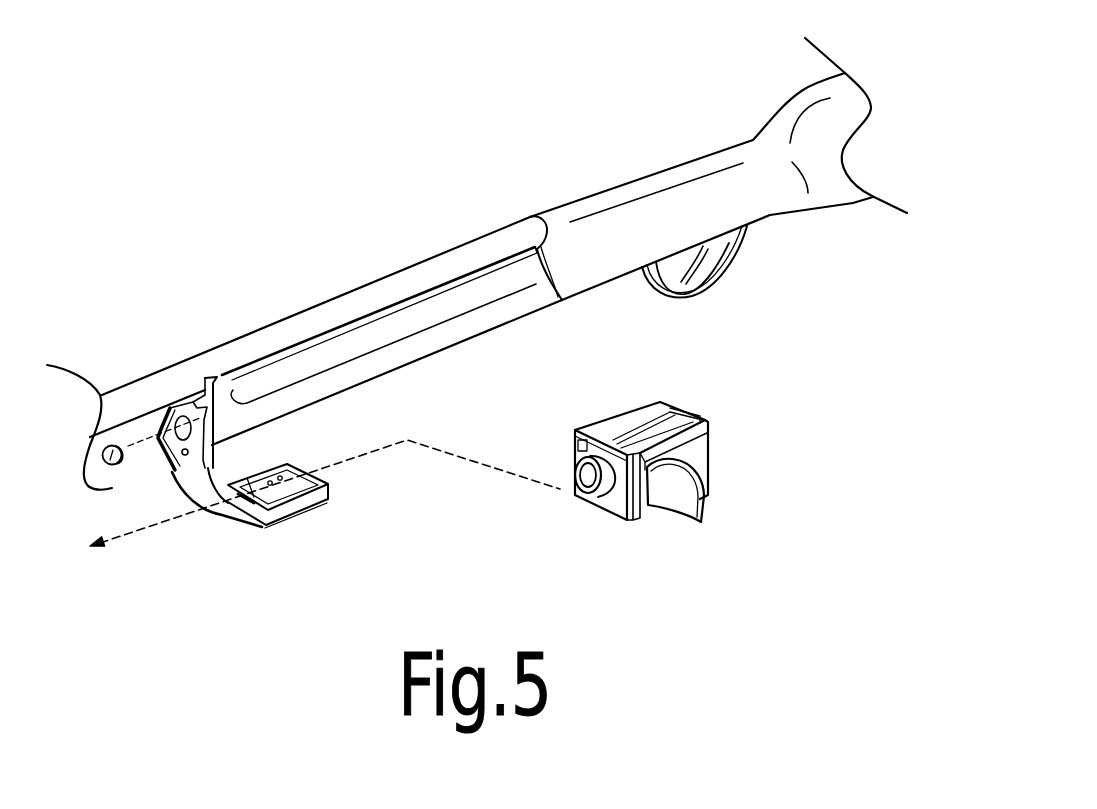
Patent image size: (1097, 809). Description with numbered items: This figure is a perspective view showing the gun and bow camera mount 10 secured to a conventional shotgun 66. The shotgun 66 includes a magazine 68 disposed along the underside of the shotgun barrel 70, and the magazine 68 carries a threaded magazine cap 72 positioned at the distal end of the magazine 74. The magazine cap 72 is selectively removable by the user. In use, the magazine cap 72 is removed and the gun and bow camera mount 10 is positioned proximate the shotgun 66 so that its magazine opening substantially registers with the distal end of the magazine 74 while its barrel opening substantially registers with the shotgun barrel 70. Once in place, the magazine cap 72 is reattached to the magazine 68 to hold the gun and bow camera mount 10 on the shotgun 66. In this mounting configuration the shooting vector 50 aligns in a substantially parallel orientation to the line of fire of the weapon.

The gun and bow camera mount 10 is at (244, 558).
The shooting vector 50 is at (160, 523).
The conventional shotgun 66 is at (497, 190).
The magazine 68 is at (437, 352).
The shotgun barrel 70 is at (313, 306).
The magazine cap 72 is at (110, 472).
The distal end of the magazine 74 is at (225, 377).